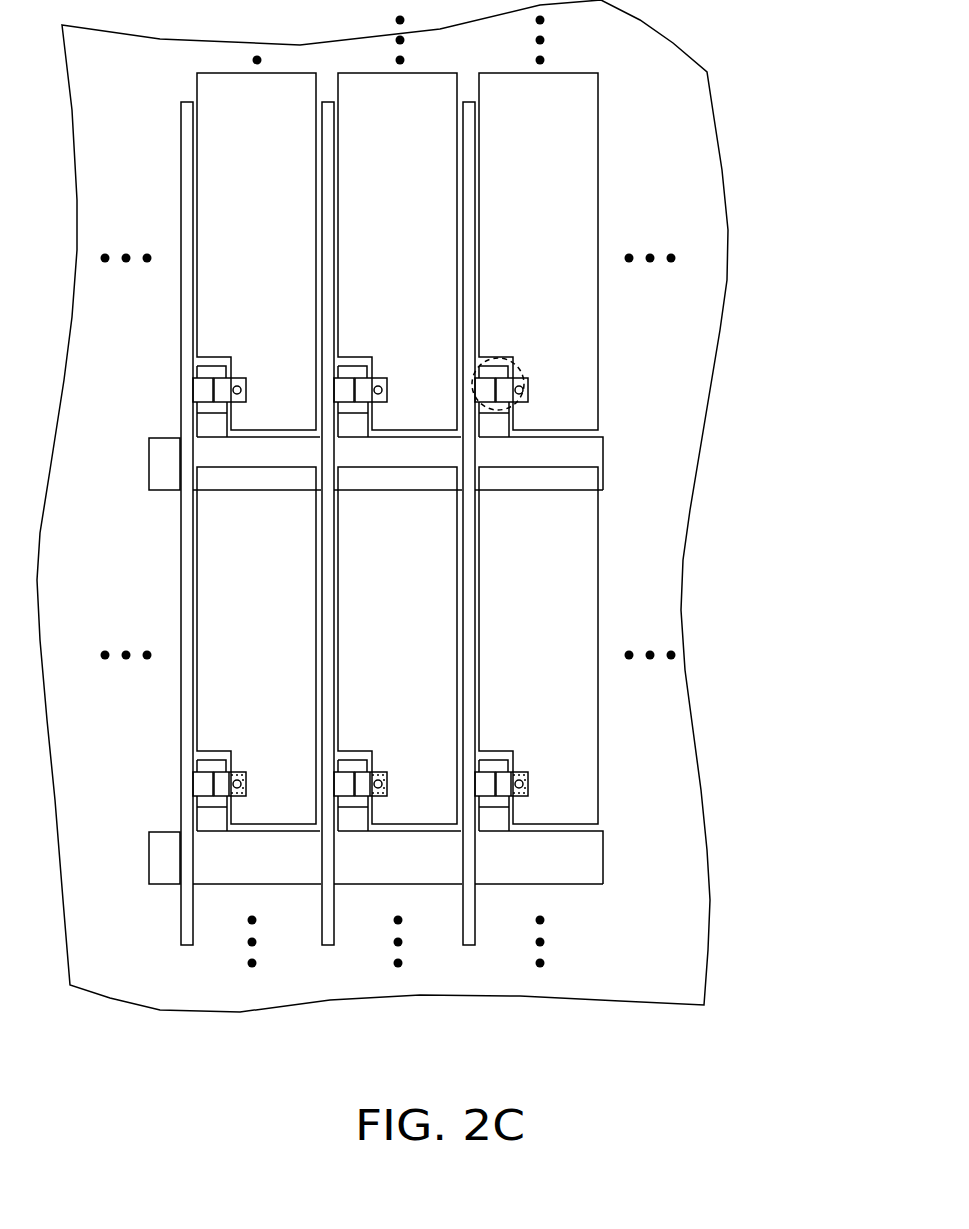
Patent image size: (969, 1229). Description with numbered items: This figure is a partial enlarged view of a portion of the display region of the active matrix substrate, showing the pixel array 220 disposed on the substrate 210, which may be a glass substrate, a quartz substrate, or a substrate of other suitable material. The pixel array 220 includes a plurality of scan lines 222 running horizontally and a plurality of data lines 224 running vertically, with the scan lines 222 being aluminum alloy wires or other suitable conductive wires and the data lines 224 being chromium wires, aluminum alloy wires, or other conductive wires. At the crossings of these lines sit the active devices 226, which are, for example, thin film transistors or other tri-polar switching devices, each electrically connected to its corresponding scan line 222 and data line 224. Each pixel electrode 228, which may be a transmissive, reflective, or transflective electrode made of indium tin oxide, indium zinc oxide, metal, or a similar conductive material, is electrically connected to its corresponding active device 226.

The substrate 210 is at (640, 873).
The pixel array 220 is at (517, 509).
The scan lines 222 is at (592, 452).
The data lines 224 is at (470, 518).
The active devices 226 is at (522, 370).
The pixel electrodes 228 is at (575, 303).